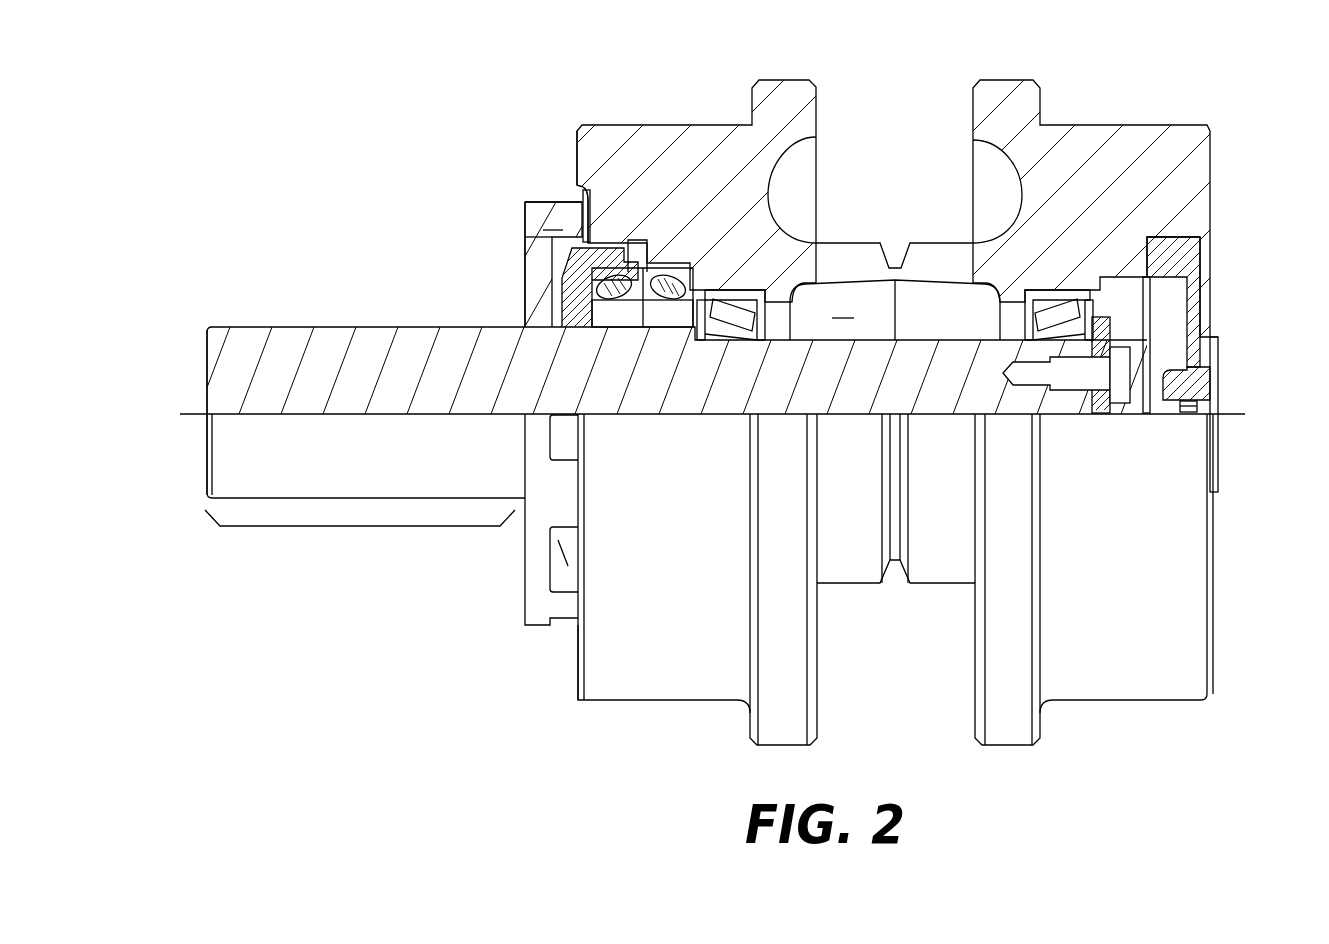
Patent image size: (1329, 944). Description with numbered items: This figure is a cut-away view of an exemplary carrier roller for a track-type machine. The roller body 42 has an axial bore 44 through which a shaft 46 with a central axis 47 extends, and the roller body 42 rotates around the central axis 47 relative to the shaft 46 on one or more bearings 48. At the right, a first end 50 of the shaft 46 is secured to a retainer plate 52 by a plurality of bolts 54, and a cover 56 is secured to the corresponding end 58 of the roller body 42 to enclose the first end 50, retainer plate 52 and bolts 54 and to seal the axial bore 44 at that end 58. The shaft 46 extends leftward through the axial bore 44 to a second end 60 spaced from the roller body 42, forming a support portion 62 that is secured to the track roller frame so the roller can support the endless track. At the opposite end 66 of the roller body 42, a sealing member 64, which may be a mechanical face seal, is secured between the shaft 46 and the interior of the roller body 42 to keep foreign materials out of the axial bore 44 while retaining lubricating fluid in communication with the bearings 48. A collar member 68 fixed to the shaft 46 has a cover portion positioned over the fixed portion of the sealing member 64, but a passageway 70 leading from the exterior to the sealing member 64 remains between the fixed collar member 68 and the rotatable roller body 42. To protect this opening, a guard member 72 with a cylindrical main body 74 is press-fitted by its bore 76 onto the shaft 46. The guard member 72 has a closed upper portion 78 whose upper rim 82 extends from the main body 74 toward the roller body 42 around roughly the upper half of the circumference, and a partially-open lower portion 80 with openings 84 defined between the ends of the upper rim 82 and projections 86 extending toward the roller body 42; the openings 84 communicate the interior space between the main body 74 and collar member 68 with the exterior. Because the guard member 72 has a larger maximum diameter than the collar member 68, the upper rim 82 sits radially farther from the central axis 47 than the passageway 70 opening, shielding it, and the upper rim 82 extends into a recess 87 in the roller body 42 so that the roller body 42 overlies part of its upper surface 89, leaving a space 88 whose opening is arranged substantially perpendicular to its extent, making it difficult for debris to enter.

The roller body 42 is at (705, 135).
The axial bore 44 is at (895, 310).
The shaft 46 is at (390, 330).
The central axis 47 is at (205, 412).
The bearings 48 is at (742, 300).
The first end 50 is at (1182, 330).
The retainer plate 52 is at (1112, 315).
The bolts 54 is at (1125, 373).
The cover 56 is at (1193, 382).
The end 58 is at (1214, 136).
The second end 60 is at (206, 458).
The support portion 62 is at (365, 528).
The sealing member 64 is at (677, 270).
The end 66 is at (571, 148).
The collar member 68 is at (605, 250).
The passageway 70 is at (650, 265).
The guard member 72 is at (525, 222).
The main body 74 is at (526, 305).
The bore 76 is at (517, 511).
The upper portion 78 is at (527, 184).
The lower portion 80 is at (571, 640).
The upper rim 82 is at (553, 218).
The openings 84 is at (572, 575).
The projections 86 is at (572, 493).
The recess 87 is at (587, 190).
The space 88 is at (628, 240).
The upper surface 89 is at (548, 202).